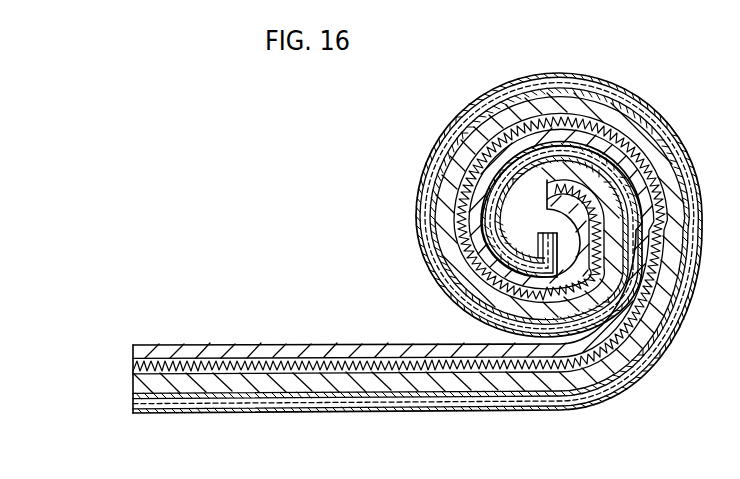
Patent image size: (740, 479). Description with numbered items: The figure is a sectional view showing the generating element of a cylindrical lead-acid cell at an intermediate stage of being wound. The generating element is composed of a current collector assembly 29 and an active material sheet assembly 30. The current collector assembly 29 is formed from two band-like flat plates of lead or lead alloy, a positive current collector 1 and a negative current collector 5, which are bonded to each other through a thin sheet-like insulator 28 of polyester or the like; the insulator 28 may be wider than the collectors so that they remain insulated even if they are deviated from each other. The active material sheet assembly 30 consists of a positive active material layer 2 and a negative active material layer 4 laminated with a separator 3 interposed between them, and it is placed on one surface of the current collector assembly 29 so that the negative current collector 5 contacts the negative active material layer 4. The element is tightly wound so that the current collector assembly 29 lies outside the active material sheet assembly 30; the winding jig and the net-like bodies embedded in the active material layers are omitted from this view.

The positive current collector 1 is at (263, 416).
The positive active material layer 2 is at (570, 137).
The separator 3 is at (490, 130).
The negative active material layer 4 is at (518, 107).
The negative current collector 5 is at (217, 405).
The insulator 28 is at (168, 412).
The current collector assembly 29 is at (630, 91).
The active material sheet assembly 30 is at (134, 361).